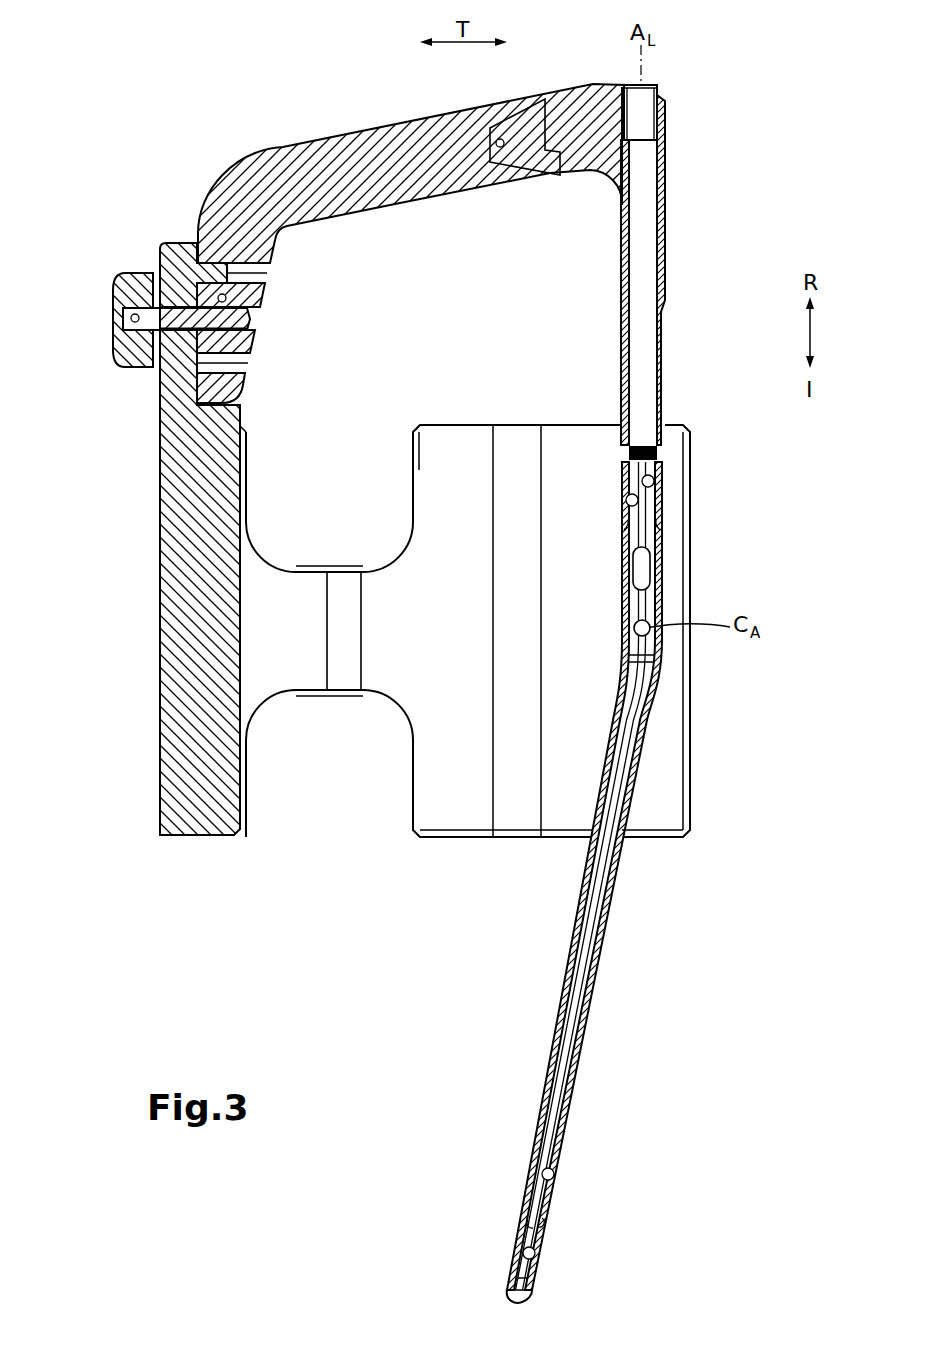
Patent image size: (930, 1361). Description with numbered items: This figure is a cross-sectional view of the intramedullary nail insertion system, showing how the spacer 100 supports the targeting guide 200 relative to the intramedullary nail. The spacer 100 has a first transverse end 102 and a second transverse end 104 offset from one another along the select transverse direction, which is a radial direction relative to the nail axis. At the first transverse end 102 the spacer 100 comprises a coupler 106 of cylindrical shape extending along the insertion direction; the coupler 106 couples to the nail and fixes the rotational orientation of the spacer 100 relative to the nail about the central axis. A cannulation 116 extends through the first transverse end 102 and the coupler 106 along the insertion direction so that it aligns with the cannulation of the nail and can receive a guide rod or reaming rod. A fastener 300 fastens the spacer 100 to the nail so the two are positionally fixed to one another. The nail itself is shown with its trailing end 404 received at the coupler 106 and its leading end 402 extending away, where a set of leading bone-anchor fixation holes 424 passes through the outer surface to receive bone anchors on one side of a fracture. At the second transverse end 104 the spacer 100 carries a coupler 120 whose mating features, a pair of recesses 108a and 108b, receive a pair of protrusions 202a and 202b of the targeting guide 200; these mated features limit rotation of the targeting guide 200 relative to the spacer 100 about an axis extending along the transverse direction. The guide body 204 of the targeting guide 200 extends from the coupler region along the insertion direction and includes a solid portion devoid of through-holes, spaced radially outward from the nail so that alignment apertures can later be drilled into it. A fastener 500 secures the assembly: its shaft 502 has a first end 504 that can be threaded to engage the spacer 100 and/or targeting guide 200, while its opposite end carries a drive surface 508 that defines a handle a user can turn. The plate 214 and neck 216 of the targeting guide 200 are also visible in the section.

The spacer 100 is at (350, 118).
The first transverse end 102 is at (616, 73).
The second transverse end 104 is at (228, 150).
The coupler 106 is at (658, 380).
The recess 108a is at (262, 272).
The recess 108b is at (245, 364).
The cannulation 116 is at (648, 105).
The coupler 120 is at (250, 238).
The targeting guide 200 is at (299, 801).
The protrusion 202a is at (195, 232).
The protrusion 202b is at (238, 385).
The guide body 204 is at (565, 832).
The plate 214 is at (175, 660).
The neck 216 is at (302, 568).
The fastener 300 is at (655, 190).
The leading end 402 is at (478, 1171).
The trailing end 404 is at (602, 531).
The leading bone-anchor fixation holes 424 is at (540, 1252).
The fastener 500 is at (110, 317).
The shaft 502 is at (160, 252).
The first end 504 is at (245, 320).
The drive surface 508 is at (112, 340).